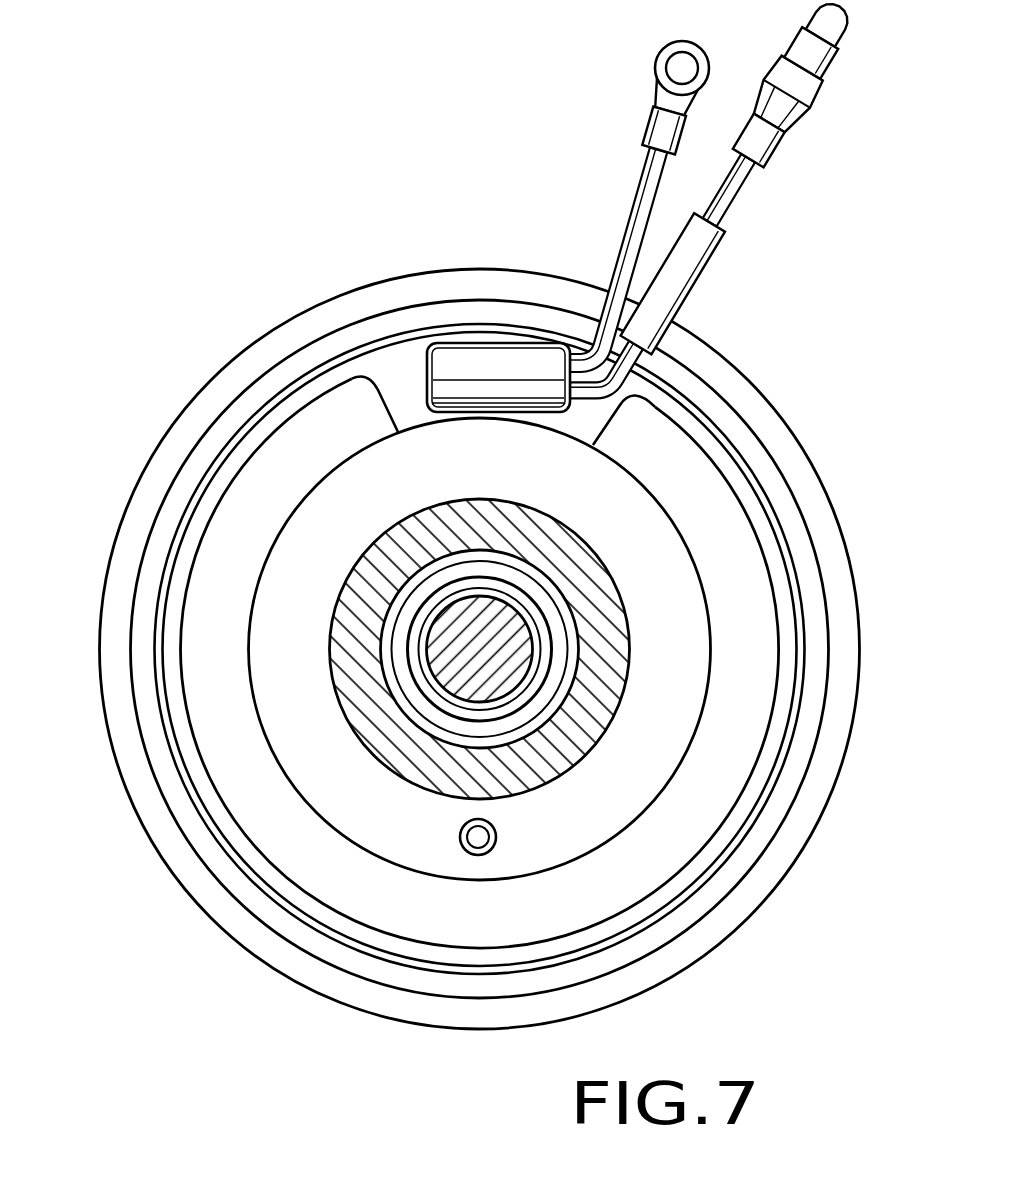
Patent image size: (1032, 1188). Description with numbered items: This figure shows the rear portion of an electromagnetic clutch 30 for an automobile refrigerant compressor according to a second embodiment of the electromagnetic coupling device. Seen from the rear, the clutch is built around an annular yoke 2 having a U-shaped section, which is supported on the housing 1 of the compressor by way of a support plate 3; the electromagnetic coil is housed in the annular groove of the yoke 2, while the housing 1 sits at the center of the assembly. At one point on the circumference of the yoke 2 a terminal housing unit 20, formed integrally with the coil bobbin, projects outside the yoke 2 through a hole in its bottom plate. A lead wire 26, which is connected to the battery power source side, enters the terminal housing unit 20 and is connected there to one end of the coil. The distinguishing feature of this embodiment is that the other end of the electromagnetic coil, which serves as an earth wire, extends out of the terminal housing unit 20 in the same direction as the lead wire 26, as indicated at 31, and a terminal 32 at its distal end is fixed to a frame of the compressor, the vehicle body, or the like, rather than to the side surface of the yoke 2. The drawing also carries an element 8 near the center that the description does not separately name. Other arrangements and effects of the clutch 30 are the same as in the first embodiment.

The housing 1 is at (420, 755).
The yoke 2 is at (398, 372).
The support plate 3 is at (290, 460).
The shaft 8 is at (502, 668).
The terminal housing unit 20 is at (526, 332).
The lead wire 26 is at (738, 195).
The electromagnetic clutch 30 is at (452, 268).
The other end of electromagnetic coil 31 is at (637, 197).
The terminal 32 is at (656, 70).